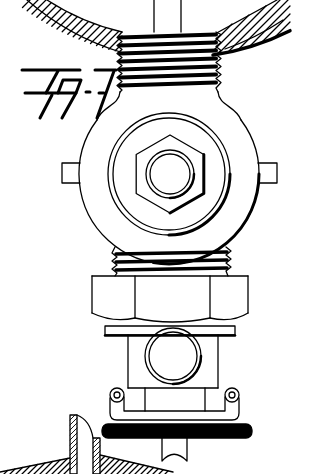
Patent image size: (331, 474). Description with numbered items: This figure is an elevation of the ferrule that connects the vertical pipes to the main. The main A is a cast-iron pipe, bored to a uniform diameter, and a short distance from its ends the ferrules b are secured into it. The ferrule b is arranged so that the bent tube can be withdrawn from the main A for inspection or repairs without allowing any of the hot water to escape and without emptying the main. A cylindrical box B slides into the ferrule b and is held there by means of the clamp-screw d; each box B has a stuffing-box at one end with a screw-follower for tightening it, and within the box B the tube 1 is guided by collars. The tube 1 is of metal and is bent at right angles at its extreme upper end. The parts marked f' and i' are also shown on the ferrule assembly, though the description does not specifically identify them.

The tube 1 is at (167, 16).
The main A is at (157, 32).
The ferrule b is at (169, 148).
The cylindrical box B is at (170, 174).
The clamp-screw d is at (173, 369).
The spring clip f' is at (165, 401).
The bar i' is at (188, 442).